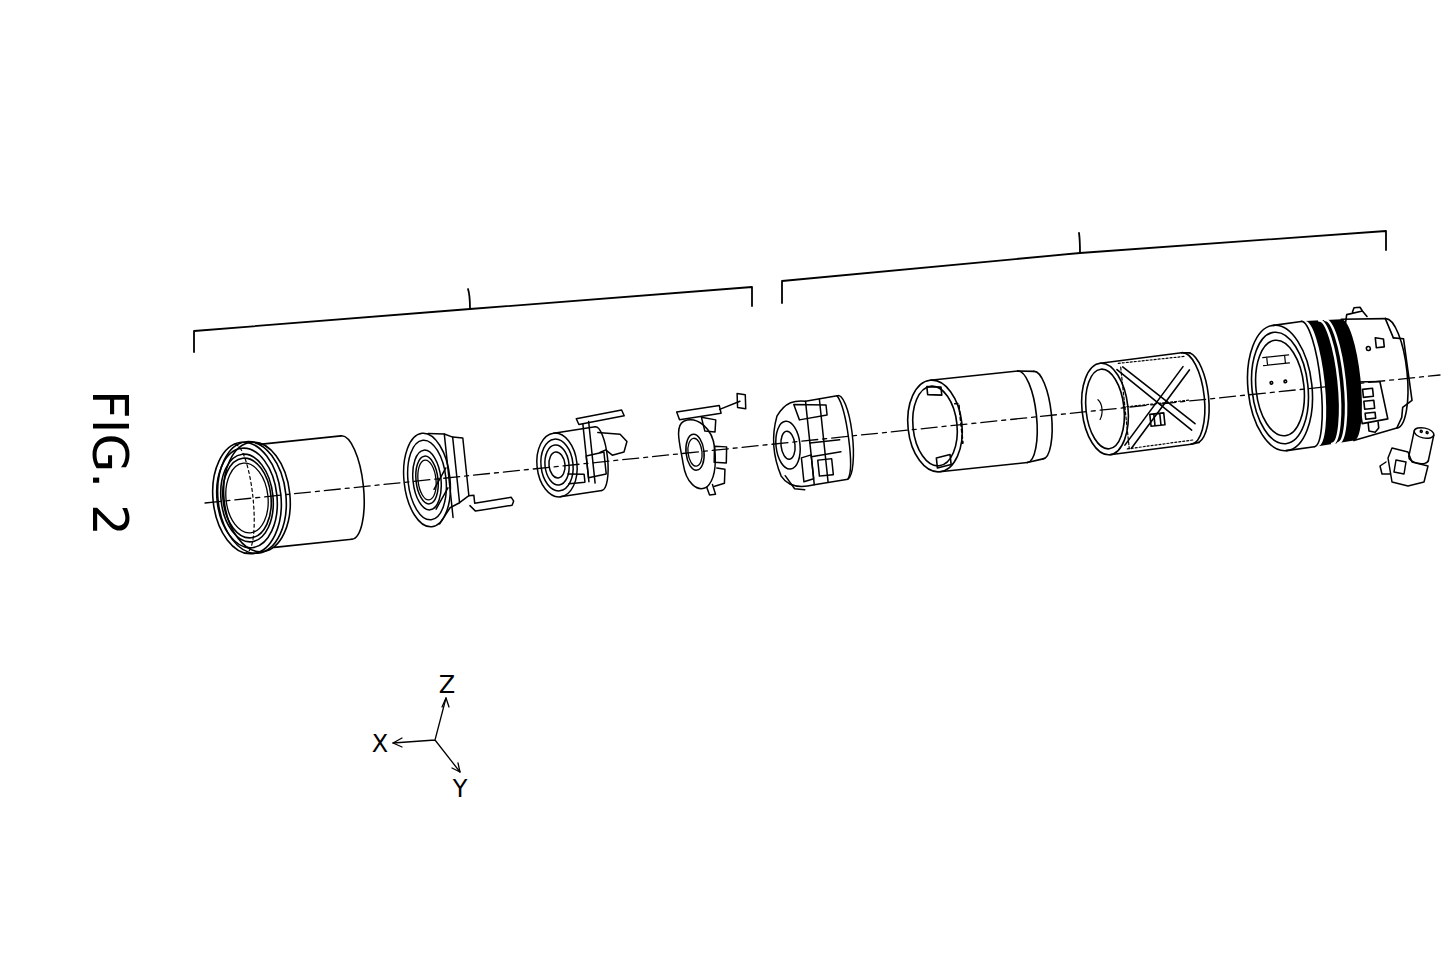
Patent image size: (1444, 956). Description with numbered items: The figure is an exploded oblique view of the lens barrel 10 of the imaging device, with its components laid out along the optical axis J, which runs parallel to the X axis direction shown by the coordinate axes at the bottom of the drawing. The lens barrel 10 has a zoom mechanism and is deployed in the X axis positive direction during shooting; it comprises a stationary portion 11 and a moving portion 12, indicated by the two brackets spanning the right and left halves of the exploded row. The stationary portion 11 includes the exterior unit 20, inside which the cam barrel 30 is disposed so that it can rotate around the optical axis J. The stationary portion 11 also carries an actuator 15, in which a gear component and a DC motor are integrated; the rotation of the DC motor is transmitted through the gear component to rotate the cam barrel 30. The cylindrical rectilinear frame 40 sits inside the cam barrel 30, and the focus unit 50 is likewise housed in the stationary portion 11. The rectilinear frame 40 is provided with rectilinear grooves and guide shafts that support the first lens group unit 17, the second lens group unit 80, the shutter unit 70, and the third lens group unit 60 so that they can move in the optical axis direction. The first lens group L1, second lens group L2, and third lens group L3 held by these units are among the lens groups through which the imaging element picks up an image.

The lens barrel 10 is at (1353, 148).
The stationary portion 11 is at (1084, 251).
The moving portion 12 is at (473, 303).
The actuator 15 is at (1400, 487).
The first lens group unit 17 is at (286, 452).
The exterior unit 20 is at (1326, 322).
The cam barrel 30 is at (1130, 358).
The rectilinear frame 40 is at (968, 377).
The focus unit 50 is at (803, 395).
The third lens group unit 60 is at (703, 407).
The shutter unit 70 is at (590, 420).
The second lens group unit 80 is at (424, 430).
The optical axis J is at (815, 446).
The first lens group L1 is at (252, 508).
The second lens group L2 is at (425, 510).
The third lens group L3 is at (688, 468).